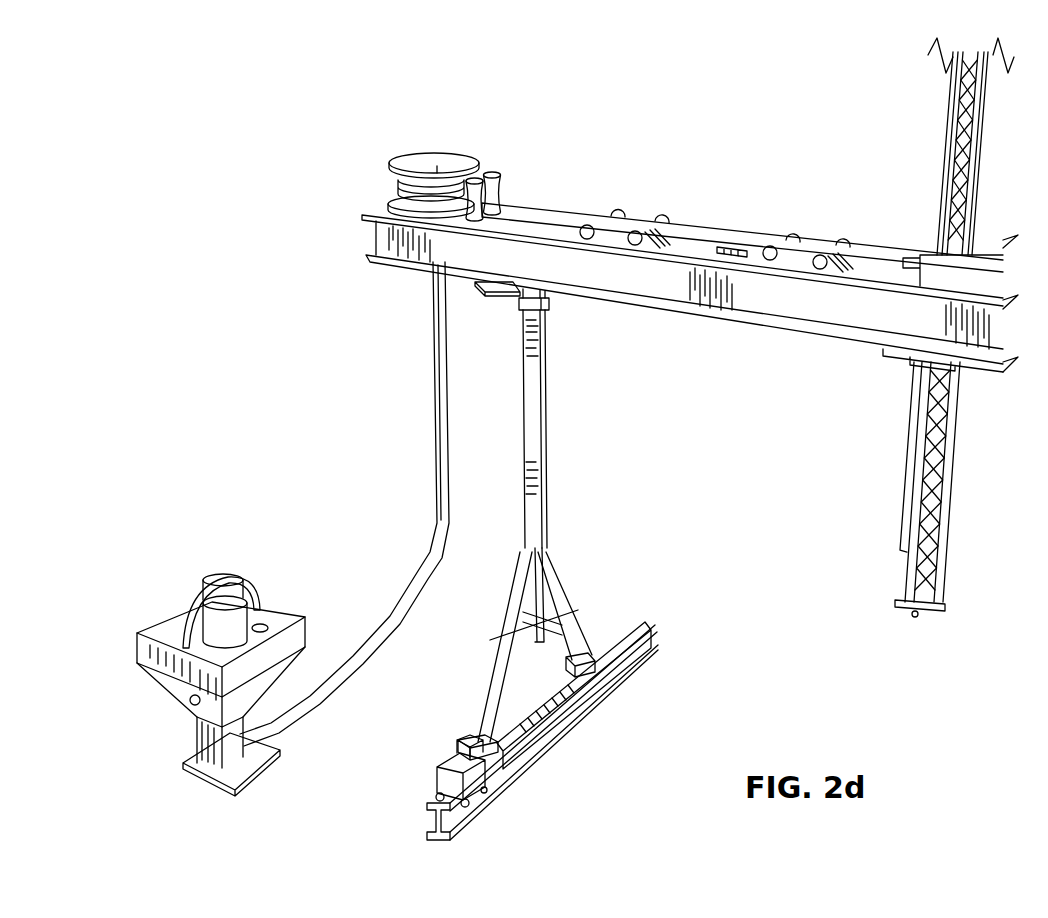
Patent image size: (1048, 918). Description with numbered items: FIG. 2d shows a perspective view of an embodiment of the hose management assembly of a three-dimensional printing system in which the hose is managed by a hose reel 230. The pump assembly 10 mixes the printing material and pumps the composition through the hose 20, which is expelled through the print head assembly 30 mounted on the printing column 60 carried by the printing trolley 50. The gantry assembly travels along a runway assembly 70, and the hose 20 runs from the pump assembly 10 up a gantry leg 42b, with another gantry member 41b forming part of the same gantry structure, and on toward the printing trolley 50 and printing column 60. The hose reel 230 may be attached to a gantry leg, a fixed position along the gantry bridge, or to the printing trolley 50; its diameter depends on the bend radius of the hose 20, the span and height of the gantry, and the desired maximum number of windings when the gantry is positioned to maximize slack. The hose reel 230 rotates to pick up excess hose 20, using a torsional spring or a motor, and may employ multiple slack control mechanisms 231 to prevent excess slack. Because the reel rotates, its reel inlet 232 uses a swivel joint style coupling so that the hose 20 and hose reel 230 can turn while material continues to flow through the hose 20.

The pump assembly 10 is at (178, 600).
The hose 20 is at (426, 389).
The print head assembly 30 is at (897, 620).
The base rail beam 41b is at (583, 683).
The gantry leg 42b is at (545, 397).
The printing trolley 50 is at (927, 238).
The printing column 60 is at (939, 78).
The runway assembly 70 is at (492, 802).
The hose reel 230 is at (448, 152).
The slack control mechanisms 231 is at (437, 160).
The reel inlet 232 is at (500, 176).